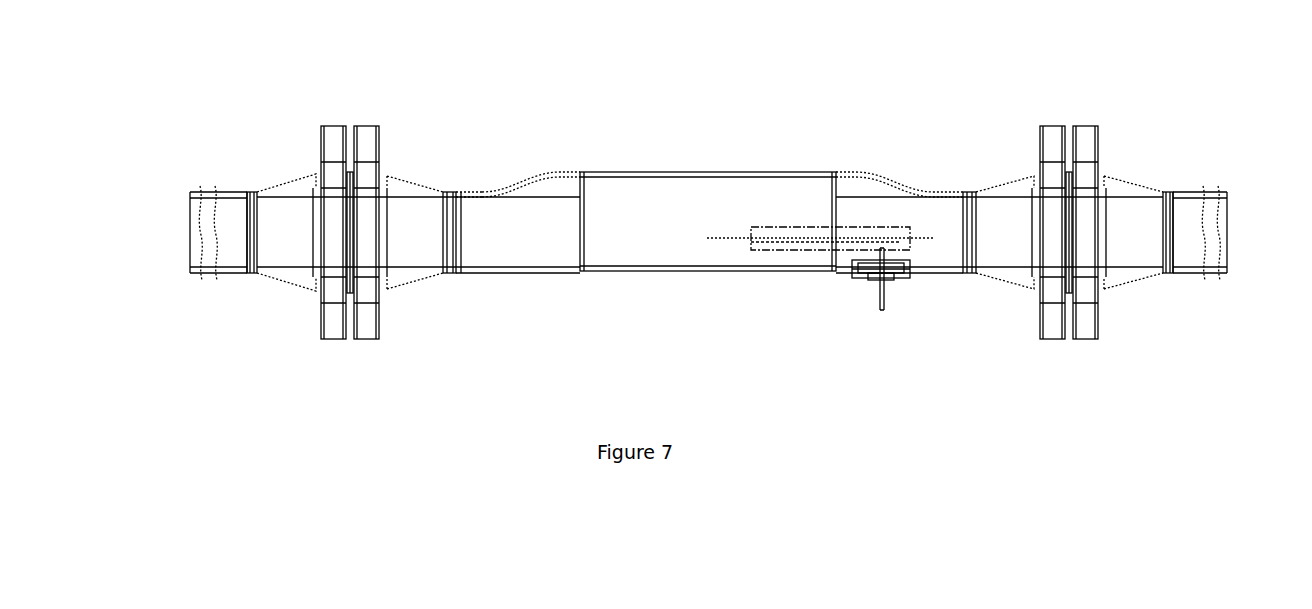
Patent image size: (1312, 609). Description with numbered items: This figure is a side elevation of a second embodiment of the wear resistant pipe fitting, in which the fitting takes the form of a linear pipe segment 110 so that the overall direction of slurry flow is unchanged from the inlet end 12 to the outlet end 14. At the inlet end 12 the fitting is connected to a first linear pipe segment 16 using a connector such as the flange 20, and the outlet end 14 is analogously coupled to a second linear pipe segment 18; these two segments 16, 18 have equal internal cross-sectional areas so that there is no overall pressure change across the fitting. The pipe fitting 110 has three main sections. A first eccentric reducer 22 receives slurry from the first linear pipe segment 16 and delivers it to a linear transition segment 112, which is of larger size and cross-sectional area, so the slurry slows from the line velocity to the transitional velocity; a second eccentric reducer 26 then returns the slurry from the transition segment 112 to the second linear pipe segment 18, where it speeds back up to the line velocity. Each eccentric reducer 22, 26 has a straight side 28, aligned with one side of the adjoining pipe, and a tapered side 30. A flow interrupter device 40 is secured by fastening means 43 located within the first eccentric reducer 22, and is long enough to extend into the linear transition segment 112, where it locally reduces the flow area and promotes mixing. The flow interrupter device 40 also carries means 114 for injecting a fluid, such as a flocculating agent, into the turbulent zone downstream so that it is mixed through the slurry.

The linear pipe segment 110 is at (1012, 88).
The inlet end 12 is at (1227, 237).
The outlet end 14 is at (192, 237).
The first linear pipe segment 16 is at (1190, 268).
The second linear pipe segment 18 is at (236, 274).
The flange 20 is at (335, 338).
The first eccentric reducer 22 is at (930, 190).
The second eccentric reducer 26 is at (479, 192).
The straight side 28 is at (514, 272).
The tapered side 30 is at (531, 176).
The flow interrupter device 40 is at (765, 251).
The fastening means 43 is at (853, 274).
The linear transition segment 112 is at (706, 172).
The means for injecting a fluid 114 is at (886, 310).